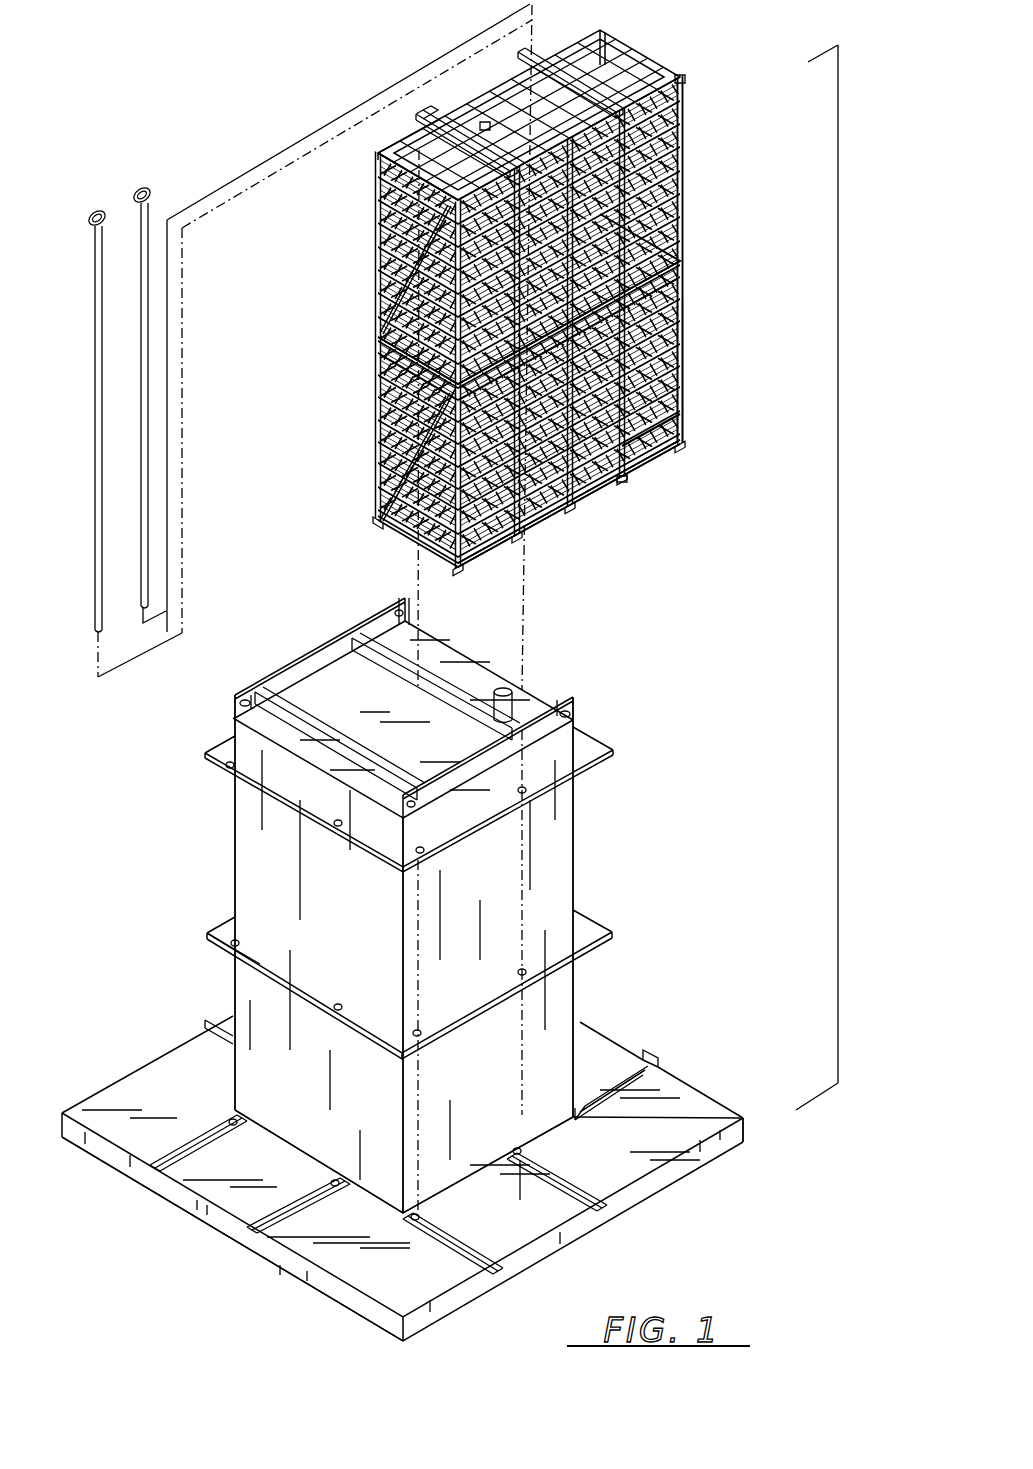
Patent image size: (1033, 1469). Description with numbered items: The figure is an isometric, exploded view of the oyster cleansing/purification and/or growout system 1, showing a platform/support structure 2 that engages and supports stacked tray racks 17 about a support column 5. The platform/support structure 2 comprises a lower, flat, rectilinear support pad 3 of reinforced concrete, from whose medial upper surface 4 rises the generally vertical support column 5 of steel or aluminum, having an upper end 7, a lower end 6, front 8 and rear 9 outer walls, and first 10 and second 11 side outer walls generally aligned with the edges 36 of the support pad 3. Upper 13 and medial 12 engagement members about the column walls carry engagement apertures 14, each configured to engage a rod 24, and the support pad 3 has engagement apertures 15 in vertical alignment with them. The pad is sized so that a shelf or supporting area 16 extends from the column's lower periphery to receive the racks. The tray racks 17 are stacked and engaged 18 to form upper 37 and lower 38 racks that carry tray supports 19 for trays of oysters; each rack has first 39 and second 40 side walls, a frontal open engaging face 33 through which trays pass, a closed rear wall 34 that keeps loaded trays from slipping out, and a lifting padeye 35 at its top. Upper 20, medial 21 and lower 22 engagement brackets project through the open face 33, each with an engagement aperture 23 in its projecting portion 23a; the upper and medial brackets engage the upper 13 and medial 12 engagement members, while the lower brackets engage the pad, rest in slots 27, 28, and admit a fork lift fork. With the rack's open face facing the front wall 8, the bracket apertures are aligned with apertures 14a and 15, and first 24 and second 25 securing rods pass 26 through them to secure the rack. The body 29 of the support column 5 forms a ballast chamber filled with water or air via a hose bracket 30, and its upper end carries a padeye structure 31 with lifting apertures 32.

The oyster cleansing/purification and/or growout system 1 is at (840, 516).
The platform/support structure 2 is at (108, 1082).
The support pad 3 is at (440, 1320).
The medial upper surface 4 is at (566, 1100).
The support column 5 is at (575, 865).
The lower end 6 is at (385, 1200).
The upper end 7 is at (576, 718).
The front outer wall 8 is at (477, 1059).
The rear outer wall 9 is at (233, 842).
The first side outer wall 10 is at (292, 1054).
The second side outer wall 11 is at (580, 812).
The medial engagement member 12 is at (613, 932).
The upper engagement member 13 is at (612, 760).
The engagement apertures 14 is at (237, 932).
The engagement apertures 14a is at (418, 1030).
The engagement apertures 15 is at (545, 1128).
The shelf or supporting area 16 is at (708, 1130).
The tray racks 17 is at (706, 160).
The stacked engagement 18 is at (372, 318).
The tray supports 19 is at (653, 415).
The upper engagement brackets 20 is at (533, 52).
The medial engagement brackets 21 is at (380, 296).
The lower engagement brackets 22 is at (628, 480).
The engagement aperture 23 is at (423, 108).
The projecting portion 23a is at (445, 98).
The first securing rod 24 is at (97, 500).
The second securing rod 25 is at (140, 240).
The rod passage 26 is at (538, 613).
The slot 27 is at (505, 1265).
The slot 28 is at (598, 1212).
The body 29 is at (476, 876).
The hose bracket 30 is at (503, 690).
The padeye structure 31 is at (336, 645).
The lifting apertures 32 is at (250, 692).
The frontal open engaging face 33 is at (378, 200).
The rear wall 34 is at (683, 118).
The lifting padeye 35 is at (487, 124).
The edges 36 is at (648, 1062).
The upper rack 37 is at (683, 143).
The lower rack 38 is at (688, 396).
The first side wall 39 is at (380, 440).
The second side wall 40 is at (688, 373).